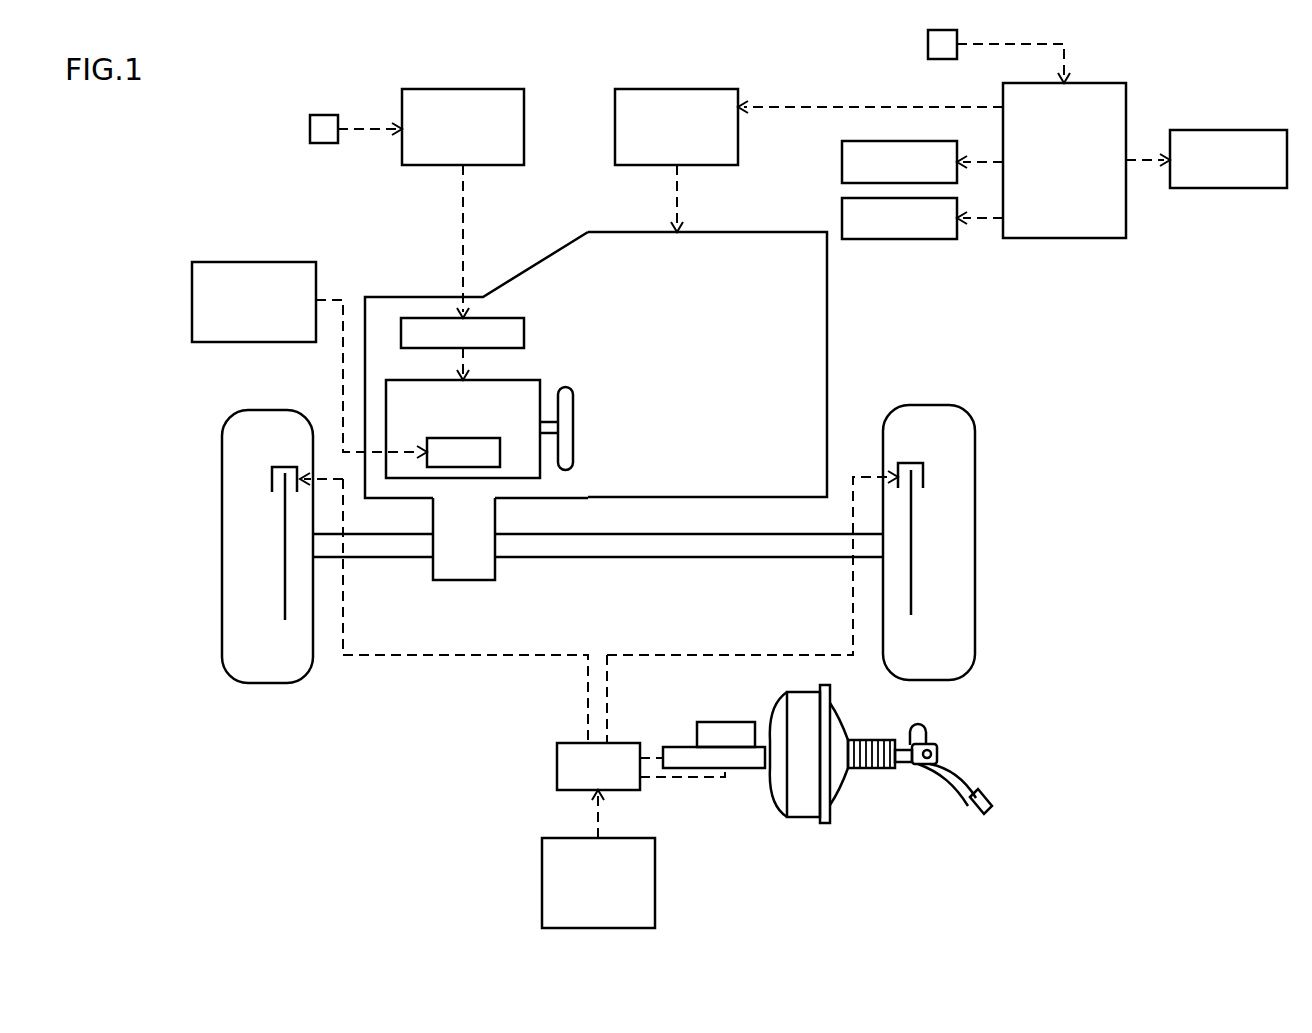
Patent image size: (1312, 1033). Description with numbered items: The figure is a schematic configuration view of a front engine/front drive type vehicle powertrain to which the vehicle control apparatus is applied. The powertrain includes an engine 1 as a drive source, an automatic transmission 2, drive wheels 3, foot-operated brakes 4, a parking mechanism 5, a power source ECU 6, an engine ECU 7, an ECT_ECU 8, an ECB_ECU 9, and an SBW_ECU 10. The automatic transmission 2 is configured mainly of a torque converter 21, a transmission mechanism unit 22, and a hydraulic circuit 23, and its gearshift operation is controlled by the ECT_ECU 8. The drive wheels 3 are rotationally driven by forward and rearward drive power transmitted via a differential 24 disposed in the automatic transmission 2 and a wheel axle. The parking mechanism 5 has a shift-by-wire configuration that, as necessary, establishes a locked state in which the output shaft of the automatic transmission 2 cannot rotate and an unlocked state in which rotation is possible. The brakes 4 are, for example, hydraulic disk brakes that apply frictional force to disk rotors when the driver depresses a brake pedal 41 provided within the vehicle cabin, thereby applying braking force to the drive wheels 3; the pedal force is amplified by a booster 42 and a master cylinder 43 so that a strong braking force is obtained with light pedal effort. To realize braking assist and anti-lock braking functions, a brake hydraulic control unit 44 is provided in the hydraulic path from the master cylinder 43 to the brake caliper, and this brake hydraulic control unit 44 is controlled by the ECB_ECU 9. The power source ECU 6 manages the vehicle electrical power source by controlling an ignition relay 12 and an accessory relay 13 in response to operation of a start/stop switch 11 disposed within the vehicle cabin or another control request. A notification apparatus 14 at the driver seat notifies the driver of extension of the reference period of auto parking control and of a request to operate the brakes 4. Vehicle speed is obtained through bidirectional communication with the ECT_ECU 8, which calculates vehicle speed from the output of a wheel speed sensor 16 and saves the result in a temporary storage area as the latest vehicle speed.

The engine 1 is at (627, 232).
The automatic transmission 2 is at (504, 282).
The drive wheels 3 is at (265, 683).
The foot-operated brakes 4 is at (278, 543).
The parking mechanism 5 is at (460, 438).
The power source ECU 6 is at (1063, 238).
The engine ECU 7 is at (694, 89).
The ECT_ECU 8 is at (474, 89).
The ECB_ECU 9 is at (542, 858).
The SBW_ECU 10 is at (265, 262).
The start/stop switch 11 is at (928, 44).
The ignition relay 12 is at (842, 218).
The accessory relay 13 is at (842, 160).
The notification apparatus 14 is at (1233, 130).
The wheel speed sensor 16 is at (323, 115).
The torque converter 21 is at (565, 400).
The transmission mechanism unit 22 is at (520, 380).
The hydraulic circuit 23 is at (503, 318).
The differential 24 is at (459, 575).
The brake pedal 41 is at (945, 790).
The booster 42 is at (803, 817).
The master cylinder 43 is at (743, 768).
The brake hydraulic control unit 44 is at (557, 760).